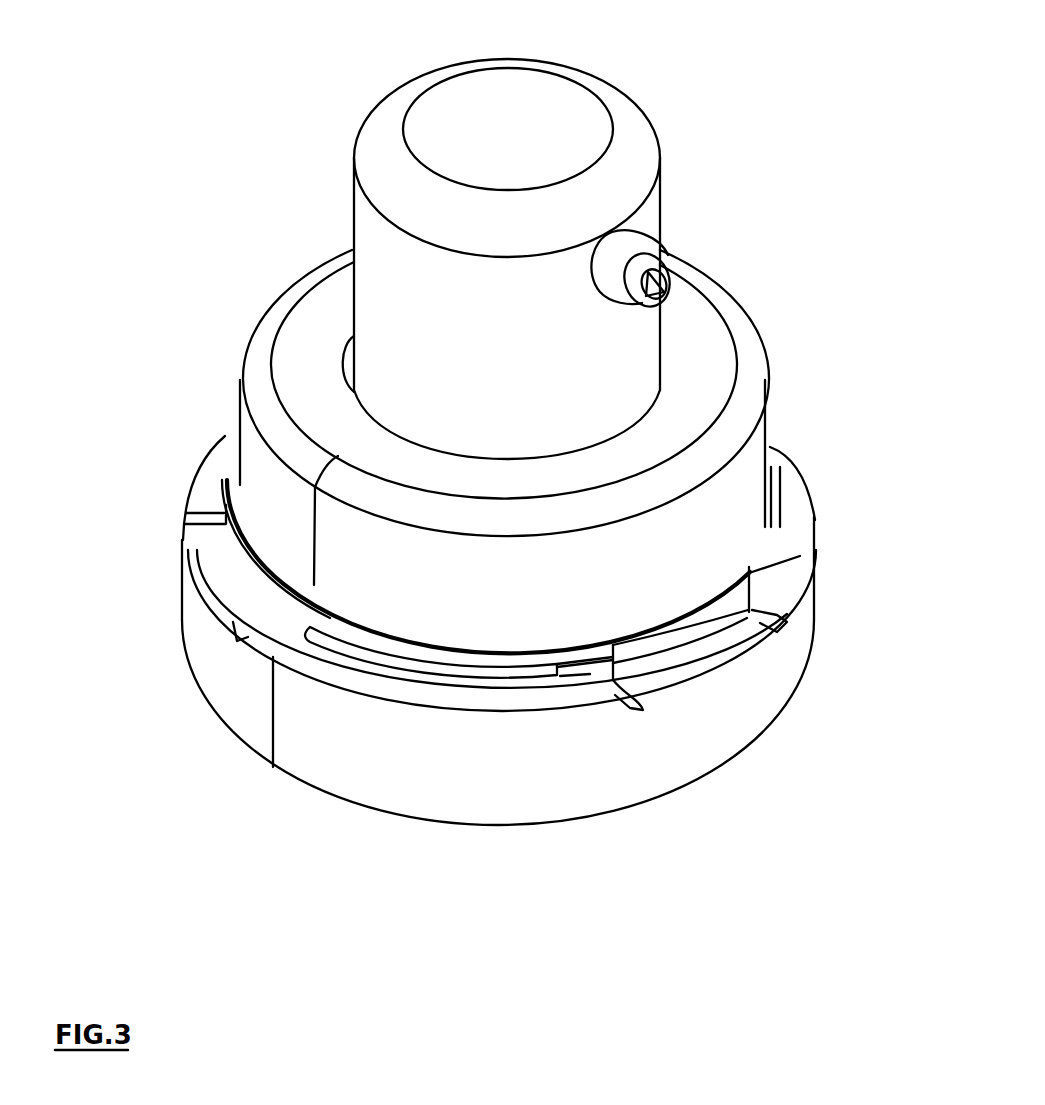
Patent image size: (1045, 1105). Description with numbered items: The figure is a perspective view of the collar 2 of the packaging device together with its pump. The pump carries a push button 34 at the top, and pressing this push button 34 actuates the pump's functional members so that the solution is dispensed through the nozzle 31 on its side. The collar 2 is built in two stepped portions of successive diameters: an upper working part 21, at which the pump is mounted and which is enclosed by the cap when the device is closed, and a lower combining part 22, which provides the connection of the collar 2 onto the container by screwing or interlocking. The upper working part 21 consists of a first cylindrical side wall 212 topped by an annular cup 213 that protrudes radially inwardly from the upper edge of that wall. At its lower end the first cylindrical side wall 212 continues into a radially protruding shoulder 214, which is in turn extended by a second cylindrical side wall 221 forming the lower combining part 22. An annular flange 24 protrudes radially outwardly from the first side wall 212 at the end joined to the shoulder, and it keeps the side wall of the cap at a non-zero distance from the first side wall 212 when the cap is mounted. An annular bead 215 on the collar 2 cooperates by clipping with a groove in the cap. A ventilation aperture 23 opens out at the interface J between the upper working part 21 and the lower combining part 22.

The collar 2 is at (178, 226).
The upper working part 21 is at (143, 263).
The lower combining part 22 is at (143, 555).
The ventilation aperture 23 is at (694, 684).
The annular flange 24 is at (583, 674).
The nozzle 31 is at (642, 258).
The push button 34 is at (575, 122).
The first cylindrical side wall 212 is at (752, 462).
The annular cup 213 is at (708, 362).
The shoulder 214 is at (802, 533).
The annular bead 215 is at (390, 668).
The second cylindrical side wall 221 is at (802, 663).
The interface J is at (845, 562).